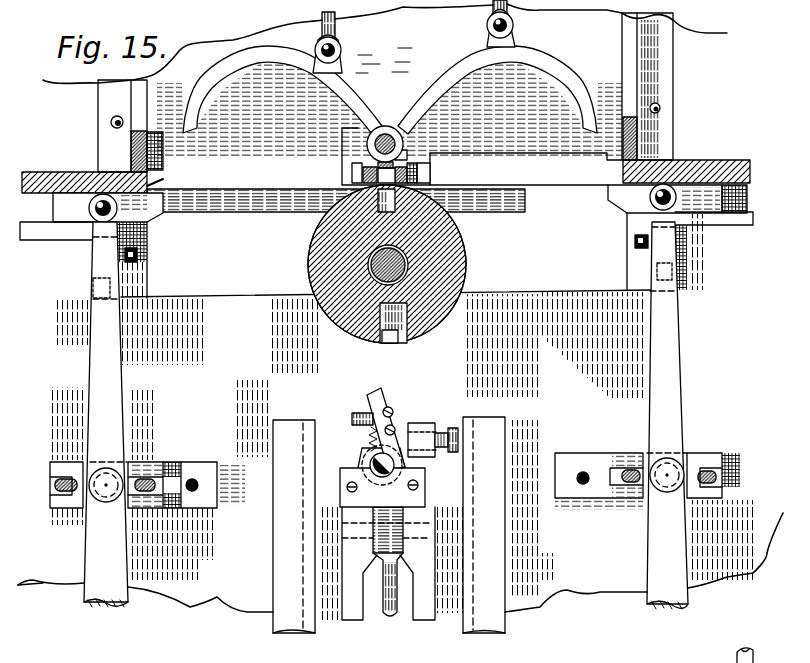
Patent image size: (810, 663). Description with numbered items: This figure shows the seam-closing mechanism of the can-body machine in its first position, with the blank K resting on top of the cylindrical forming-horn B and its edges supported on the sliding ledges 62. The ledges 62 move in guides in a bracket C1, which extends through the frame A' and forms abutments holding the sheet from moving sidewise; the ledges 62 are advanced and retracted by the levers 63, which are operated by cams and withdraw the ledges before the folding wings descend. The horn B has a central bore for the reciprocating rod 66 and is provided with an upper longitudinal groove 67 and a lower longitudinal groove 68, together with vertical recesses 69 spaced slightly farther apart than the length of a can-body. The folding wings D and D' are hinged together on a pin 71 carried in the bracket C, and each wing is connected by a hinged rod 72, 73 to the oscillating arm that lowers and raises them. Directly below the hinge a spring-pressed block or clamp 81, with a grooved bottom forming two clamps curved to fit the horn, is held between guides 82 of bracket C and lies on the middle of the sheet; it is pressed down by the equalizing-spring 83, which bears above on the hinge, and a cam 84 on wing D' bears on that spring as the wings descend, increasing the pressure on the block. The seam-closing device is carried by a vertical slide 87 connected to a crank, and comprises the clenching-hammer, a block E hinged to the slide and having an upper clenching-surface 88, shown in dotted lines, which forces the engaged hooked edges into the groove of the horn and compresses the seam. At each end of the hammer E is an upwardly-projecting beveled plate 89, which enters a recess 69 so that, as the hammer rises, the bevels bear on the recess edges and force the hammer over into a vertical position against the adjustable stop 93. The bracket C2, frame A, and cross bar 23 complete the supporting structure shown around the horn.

The hinged rod 72 is at (336, 28).
The hinged rod 73 is at (520, 9).
The pin 71 is at (388, 127).
The cam 84 is at (403, 152).
The guides 82 is at (352, 170).
The equalizing-spring 83 is at (378, 163).
The spring-pressed block or clamp 81 is at (430, 170).
The sliding ledges 62 is at (157, 216).
The levers 63 is at (127, 394).
The upper longitudinal groove 67 is at (325, 219).
The reciprocating rod 66 is at (368, 263).
The cross bar 23 is at (490, 209).
The lower longitudinal groove 68 is at (392, 341).
The vertical recesses 69 is at (407, 323).
The upwardly-projecting plate 89 is at (375, 381).
The upper clenching-surface 88 is at (397, 393).
The adjustable stop 93 is at (441, 433).
The vertical slide 87 is at (350, 610).
The frame A is at (306, 605).
The frame A' is at (681, 86).
The forming-horn B is at (466, 263).
The bracket C is at (118, 134).
The bracket C1 is at (93, 284).
The standard bracket C2 is at (53, 196).
The folding wing D is at (282, 90).
The folding wing D' is at (497, 84).
The clenching-hammer E is at (382, 447).
The blank K is at (568, 175).